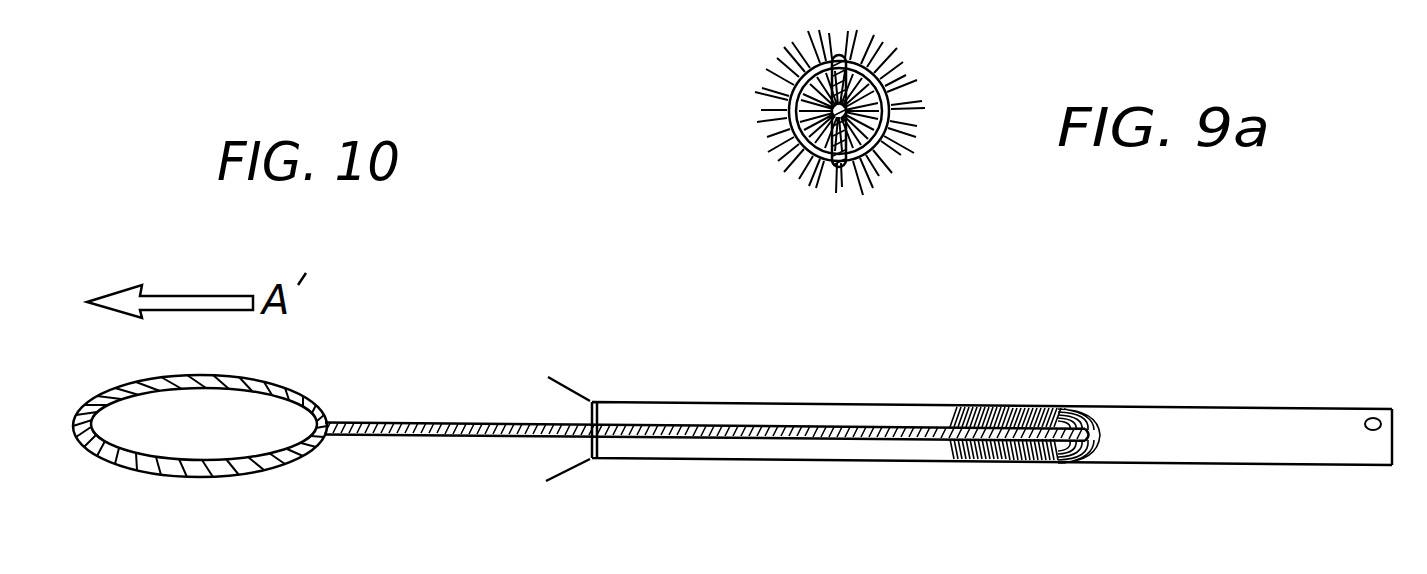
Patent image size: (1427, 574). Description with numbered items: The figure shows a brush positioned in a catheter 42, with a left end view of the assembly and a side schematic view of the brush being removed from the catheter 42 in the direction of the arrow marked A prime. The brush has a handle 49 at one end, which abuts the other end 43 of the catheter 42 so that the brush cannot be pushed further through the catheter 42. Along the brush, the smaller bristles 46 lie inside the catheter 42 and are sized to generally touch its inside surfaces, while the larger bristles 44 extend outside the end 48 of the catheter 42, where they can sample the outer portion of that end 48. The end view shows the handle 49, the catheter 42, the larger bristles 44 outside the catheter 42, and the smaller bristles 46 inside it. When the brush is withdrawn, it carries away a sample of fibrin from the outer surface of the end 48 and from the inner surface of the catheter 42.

In FIG. 10, the catheter 42 is at (833, 405).
In FIG. 9a, the catheter 42 is at (793, 80).
In FIG. 10, the other end of the catheter 43 is at (588, 398).
In FIG. 10, the larger bristles 44 is at (1082, 410).
In FIG. 9a, the larger bristles 44 is at (913, 123).
In FIG. 10, the smaller bristles 46 is at (997, 405).
In FIG. 9a, the smaller bristles 46 is at (873, 108).
In FIG. 10, the end of the catheter 48 is at (1397, 417).
In FIG. 10, the handle of the brush 49 is at (280, 388).
In FIG. 9a, the handle of the brush 49 is at (807, 150).